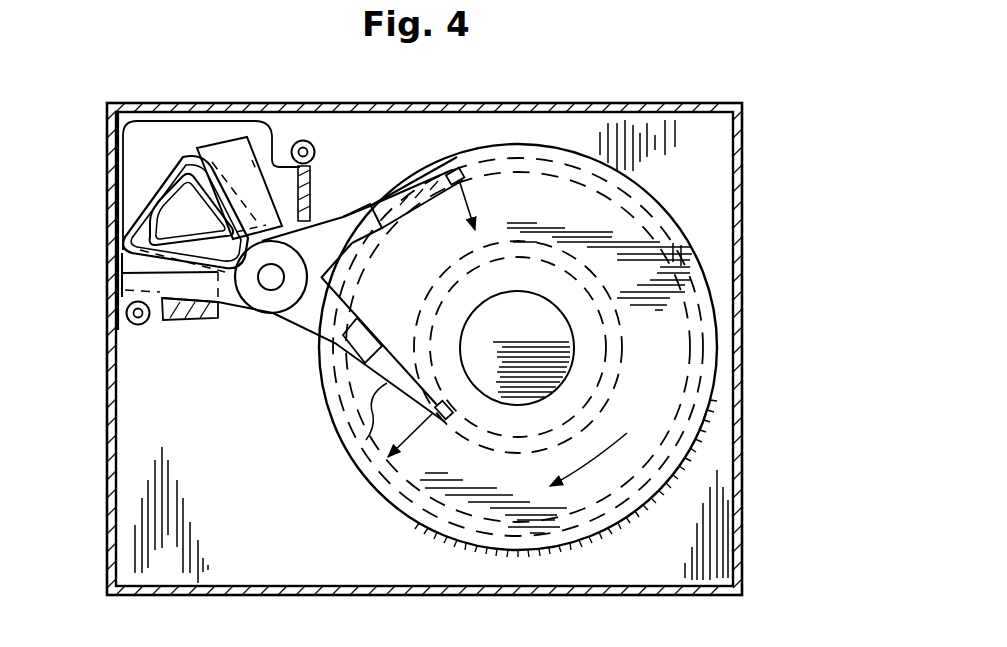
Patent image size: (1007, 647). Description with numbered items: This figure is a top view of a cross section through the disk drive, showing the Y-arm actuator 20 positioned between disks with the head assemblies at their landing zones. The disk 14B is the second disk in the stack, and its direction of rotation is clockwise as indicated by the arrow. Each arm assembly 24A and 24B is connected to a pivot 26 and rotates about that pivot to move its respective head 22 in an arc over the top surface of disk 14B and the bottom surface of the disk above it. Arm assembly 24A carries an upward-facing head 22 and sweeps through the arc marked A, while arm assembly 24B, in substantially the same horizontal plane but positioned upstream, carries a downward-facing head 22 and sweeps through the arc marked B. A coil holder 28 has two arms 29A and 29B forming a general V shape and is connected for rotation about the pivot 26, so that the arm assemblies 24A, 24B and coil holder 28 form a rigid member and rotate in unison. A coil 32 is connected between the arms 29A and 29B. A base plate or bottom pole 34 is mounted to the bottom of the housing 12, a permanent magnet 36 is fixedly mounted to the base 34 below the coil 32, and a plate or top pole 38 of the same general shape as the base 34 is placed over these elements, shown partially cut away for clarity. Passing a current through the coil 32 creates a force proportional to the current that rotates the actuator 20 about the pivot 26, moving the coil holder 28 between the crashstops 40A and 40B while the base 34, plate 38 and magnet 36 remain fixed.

The housing 12 is at (658, 593).
The disk 14B is at (566, 552).
The actuator 20 is at (218, 370).
The head 22 is at (462, 165).
The arm assembly 24A is at (400, 187).
The arm assembly 24B is at (367, 430).
The pivot 26 is at (270, 292).
The coil holder 28 is at (225, 313).
The arm of coil holder 29A is at (212, 148).
The arm of coil holder 29B is at (160, 302).
The coil 32 is at (152, 172).
The base plate or bottom pole 34 is at (116, 218).
The permanent magnet 36 is at (155, 207).
The plate or top pole 38 is at (143, 130).
The crashstop 40A is at (307, 145).
The crashstop 40B is at (137, 327).